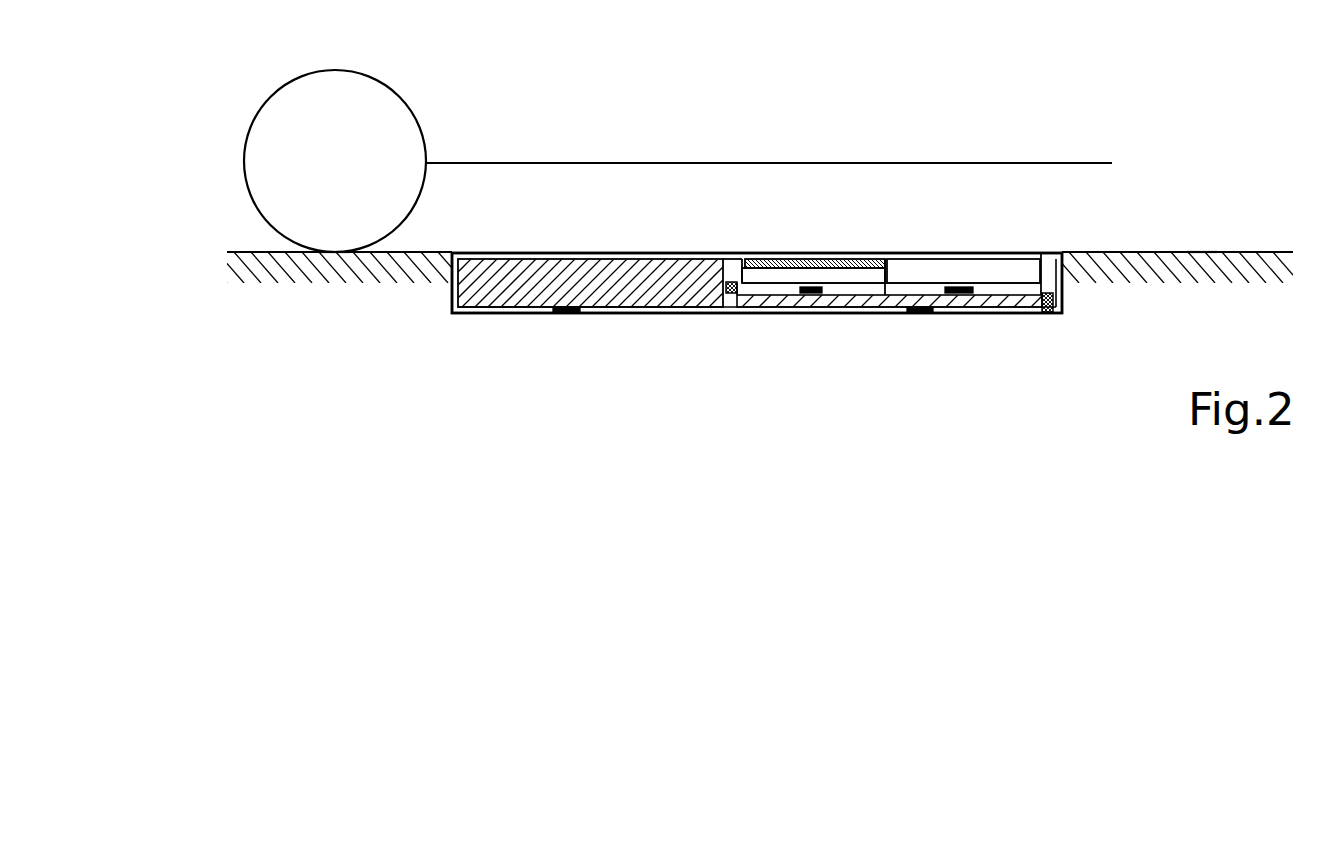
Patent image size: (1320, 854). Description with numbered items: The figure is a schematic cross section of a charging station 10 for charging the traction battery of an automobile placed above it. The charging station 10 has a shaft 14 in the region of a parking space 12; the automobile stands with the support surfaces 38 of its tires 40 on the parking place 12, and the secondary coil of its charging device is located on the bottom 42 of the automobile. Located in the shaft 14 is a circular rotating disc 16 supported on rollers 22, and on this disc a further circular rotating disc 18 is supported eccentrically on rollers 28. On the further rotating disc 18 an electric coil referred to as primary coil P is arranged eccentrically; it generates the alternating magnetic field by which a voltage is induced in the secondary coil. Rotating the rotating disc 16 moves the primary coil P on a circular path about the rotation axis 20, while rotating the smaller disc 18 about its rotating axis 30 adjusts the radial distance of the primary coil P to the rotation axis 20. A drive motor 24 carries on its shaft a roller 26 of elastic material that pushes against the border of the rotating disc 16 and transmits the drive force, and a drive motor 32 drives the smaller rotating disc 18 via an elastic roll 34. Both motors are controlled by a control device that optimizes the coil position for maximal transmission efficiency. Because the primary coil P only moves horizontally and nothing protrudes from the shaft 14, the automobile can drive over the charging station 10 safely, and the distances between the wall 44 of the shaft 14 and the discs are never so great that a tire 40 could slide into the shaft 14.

The charging station 10 is at (547, 225).
The parking space 12 is at (426, 248).
The shaft 14 is at (446, 297).
The rotating disc 16 is at (628, 252).
The further rotating disc 18 is at (955, 265).
The rotation axis 20 is at (750, 300).
The rollers 22 is at (567, 312).
The drive motor 24 is at (1047, 312).
The roller 26 is at (1064, 300).
The rollers 28 is at (958, 296).
The rotating axis 30 is at (878, 290).
The drive motor 32 is at (733, 295).
The roll 34 is at (735, 280).
The support surfaces 38 is at (332, 257).
The tires 40 is at (245, 163).
The bottom 42 is at (745, 165).
The wall 44 is at (1052, 262).
The primary coil P is at (858, 262).